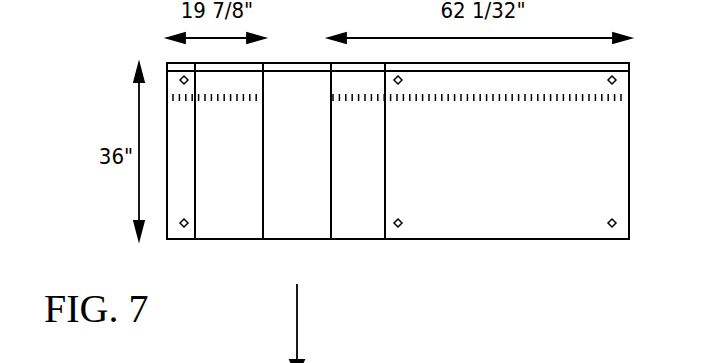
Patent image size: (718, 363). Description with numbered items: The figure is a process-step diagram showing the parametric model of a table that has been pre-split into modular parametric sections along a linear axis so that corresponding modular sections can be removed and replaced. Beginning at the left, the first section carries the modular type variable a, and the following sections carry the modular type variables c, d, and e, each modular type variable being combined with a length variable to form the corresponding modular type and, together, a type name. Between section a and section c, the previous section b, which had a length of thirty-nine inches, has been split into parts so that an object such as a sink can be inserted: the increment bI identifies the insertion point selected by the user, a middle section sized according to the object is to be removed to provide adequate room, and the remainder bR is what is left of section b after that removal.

The modular type variable a is at (177, 168).
The increment bI bl is at (238, 168).
The remainder bR is at (358, 168).
The modular type variable c is at (403, 174).
The modular type variable d is at (477, 183).
The modular type variable e is at (611, 174).